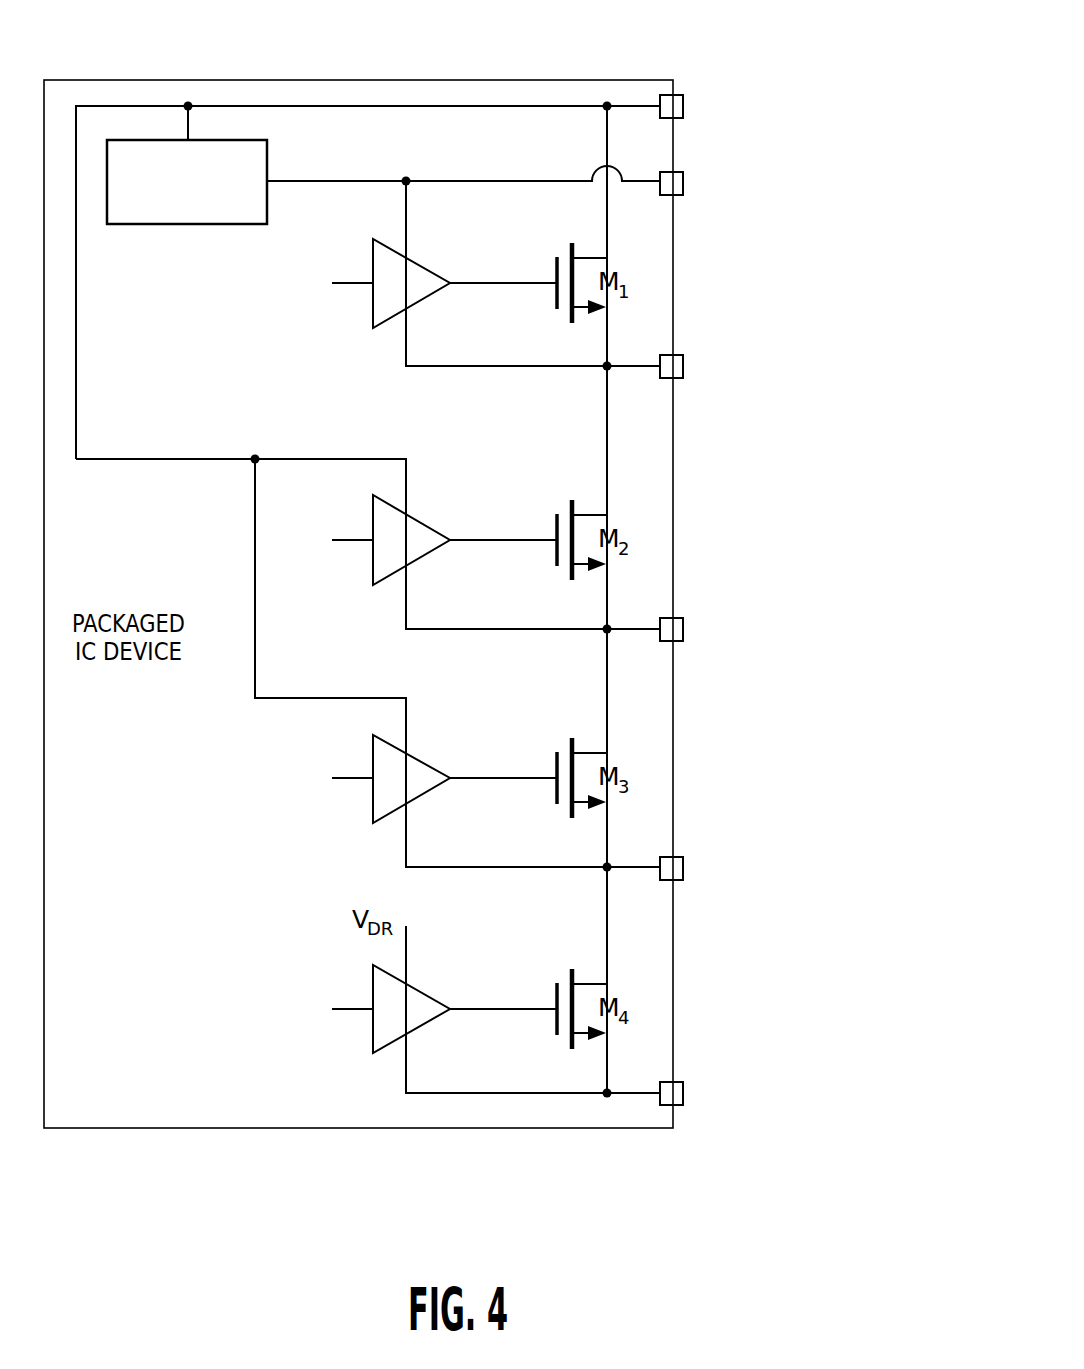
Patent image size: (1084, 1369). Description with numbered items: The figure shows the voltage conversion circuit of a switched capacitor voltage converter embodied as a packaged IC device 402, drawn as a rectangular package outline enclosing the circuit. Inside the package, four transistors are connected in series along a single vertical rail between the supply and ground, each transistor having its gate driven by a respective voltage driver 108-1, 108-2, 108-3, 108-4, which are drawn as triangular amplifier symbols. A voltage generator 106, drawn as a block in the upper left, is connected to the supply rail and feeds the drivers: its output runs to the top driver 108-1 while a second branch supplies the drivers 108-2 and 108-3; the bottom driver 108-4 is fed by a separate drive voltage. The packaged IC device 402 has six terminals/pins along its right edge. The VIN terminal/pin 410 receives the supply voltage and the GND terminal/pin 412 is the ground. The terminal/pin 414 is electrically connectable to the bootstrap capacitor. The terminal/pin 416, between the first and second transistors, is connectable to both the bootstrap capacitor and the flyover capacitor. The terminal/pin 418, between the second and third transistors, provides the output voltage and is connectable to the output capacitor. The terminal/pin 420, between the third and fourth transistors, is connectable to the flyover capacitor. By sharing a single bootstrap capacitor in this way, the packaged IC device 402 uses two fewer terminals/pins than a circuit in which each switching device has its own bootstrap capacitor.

The packaged IC device 402 is at (287, 80).
The voltage generator 106 is at (162, 224).
The voltage driver 108-1 is at (373, 302).
The voltage driver 108-2 is at (373, 563).
The voltage driver 108-3 is at (373, 803).
The voltage driver 108-4 is at (373, 1040).
The VIN terminal/pin 410 is at (675, 95).
The GND terminal/pin 412 is at (683, 1083).
The terminal/pin 414 is at (683, 194).
The terminal/pin 416 is at (683, 357).
The terminal/pin 418 is at (683, 620).
The terminal/pin 420 is at (683, 859).